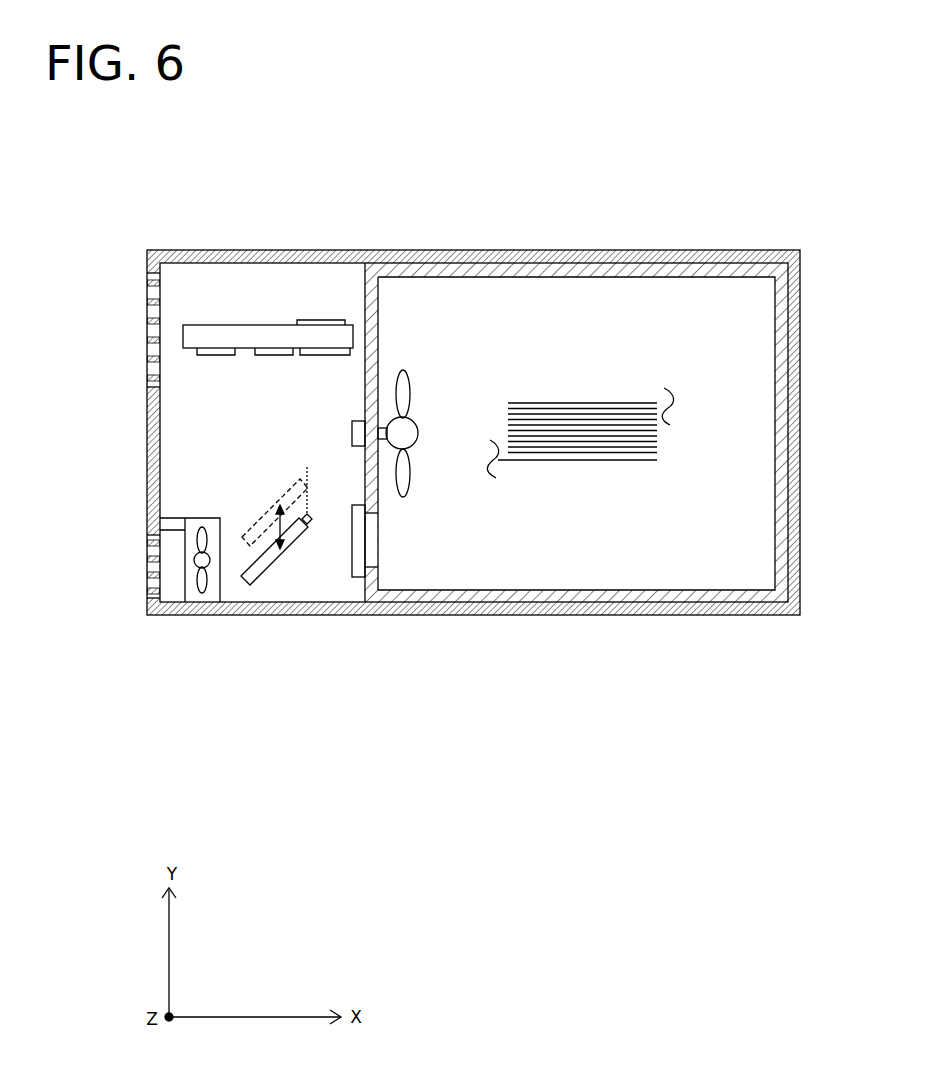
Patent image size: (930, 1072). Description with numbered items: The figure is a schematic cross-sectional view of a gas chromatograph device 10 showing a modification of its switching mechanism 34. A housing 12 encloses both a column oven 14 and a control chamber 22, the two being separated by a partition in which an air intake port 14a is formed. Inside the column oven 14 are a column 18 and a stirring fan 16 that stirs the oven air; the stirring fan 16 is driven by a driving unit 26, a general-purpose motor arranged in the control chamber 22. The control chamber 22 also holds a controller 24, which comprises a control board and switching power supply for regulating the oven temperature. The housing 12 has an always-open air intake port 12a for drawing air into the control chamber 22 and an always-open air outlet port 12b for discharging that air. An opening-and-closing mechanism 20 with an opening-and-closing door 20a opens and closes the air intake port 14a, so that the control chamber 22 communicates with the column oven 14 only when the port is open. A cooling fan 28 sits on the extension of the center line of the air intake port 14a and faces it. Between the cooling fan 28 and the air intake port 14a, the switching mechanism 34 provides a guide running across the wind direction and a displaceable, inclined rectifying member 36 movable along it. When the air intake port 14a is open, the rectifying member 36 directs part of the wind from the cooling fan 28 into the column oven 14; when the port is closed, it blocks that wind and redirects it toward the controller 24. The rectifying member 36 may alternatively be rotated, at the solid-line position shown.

The gas chromatograph device 10 is at (117, 177).
The housing 12 is at (428, 405).
The air intake port 12a is at (146, 540).
The air outlet port 12b is at (146, 322).
The column oven 14 is at (576, 405).
The air intake port 14a is at (384, 553).
The stirring fan 16 is at (421, 469).
The column 18 is at (634, 471).
The opening-and-closing mechanism 20 is at (296, 511).
The opening-and-closing door 20a is at (274, 526).
The control chamber 22 is at (177, 467).
The controller 24 is at (227, 357).
The driving unit 26 is at (352, 432).
The cooling fan 28 is at (192, 590).
The switching mechanism 34 is at (314, 531).
The rectifying member 36 is at (282, 558).